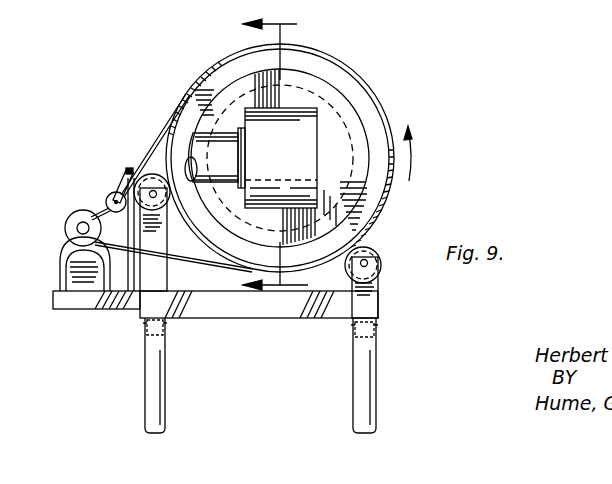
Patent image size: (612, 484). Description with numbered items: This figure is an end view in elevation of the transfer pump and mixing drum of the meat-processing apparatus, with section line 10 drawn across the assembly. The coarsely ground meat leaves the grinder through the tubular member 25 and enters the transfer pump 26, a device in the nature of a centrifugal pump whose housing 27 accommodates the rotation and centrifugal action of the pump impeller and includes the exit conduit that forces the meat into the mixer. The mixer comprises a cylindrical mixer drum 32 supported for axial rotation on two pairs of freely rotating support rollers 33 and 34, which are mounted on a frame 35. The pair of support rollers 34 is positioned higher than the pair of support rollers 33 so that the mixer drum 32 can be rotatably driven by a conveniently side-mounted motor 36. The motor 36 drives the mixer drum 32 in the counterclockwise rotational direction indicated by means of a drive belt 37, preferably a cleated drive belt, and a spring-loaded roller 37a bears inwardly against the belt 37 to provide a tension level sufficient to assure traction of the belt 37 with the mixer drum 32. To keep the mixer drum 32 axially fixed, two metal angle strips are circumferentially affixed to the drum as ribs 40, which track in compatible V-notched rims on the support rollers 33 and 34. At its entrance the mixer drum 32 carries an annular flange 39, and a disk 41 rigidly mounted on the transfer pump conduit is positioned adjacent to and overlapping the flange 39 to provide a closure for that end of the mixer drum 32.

The section line 10 is at (289, 155).
The tubular member 25 is at (166, 120).
The transfer pump 26 is at (317, 137).
The housing 27 is at (268, 122).
The mixer drum 32 is at (388, 111).
The support rollers 33 is at (381, 265).
The support rollers 34 is at (143, 175).
The frame 35 is at (360, 375).
The motor 36 is at (56, 275).
The drive belt 37 is at (156, 151).
The spring-loaded roller 37a is at (107, 202).
The annular flange 39 is at (208, 82).
The ribs 40 is at (388, 203).
The disk 41 is at (318, 87).